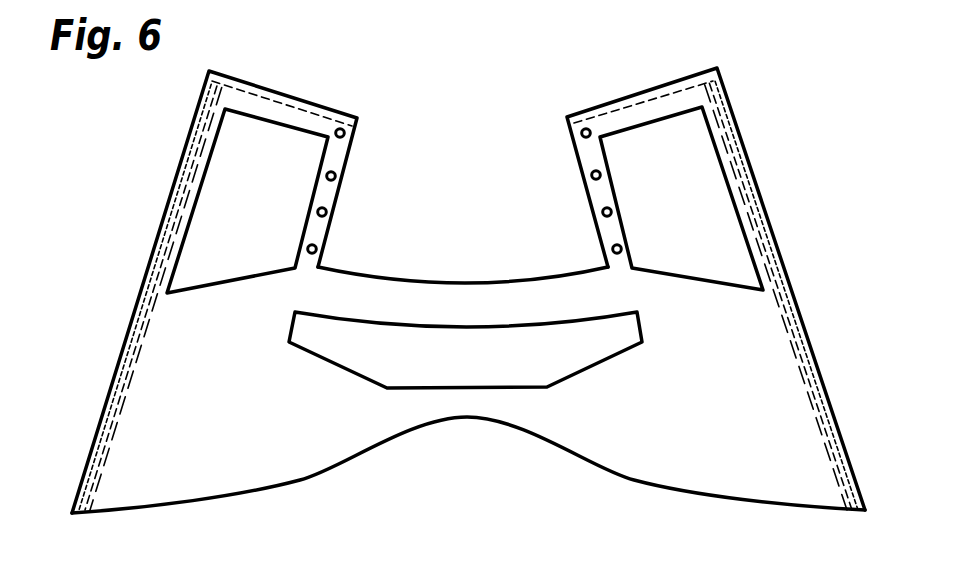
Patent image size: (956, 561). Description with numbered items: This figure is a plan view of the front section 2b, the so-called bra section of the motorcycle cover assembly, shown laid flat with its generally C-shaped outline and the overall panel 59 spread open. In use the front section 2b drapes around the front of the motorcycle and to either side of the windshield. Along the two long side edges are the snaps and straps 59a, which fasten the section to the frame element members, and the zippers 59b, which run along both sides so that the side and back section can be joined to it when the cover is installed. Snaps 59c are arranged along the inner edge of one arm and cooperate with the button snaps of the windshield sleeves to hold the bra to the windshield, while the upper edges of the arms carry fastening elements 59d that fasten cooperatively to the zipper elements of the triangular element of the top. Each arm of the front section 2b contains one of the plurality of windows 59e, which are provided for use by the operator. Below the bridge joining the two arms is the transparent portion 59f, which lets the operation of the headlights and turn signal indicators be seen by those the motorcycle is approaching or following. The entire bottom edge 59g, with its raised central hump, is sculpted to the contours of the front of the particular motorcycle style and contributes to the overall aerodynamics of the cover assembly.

The front section 2b is at (103, 310).
The base plate 59 is at (727, 315).
The snaps and straps 59a is at (207, 117).
The zippers 59b is at (187, 152).
The snaps 59c is at (287, 103).
The fastening elements 59d is at (638, 102).
The windows 59e is at (212, 220).
The transparent portion 59f is at (408, 355).
The bottom edge 59g is at (276, 477).